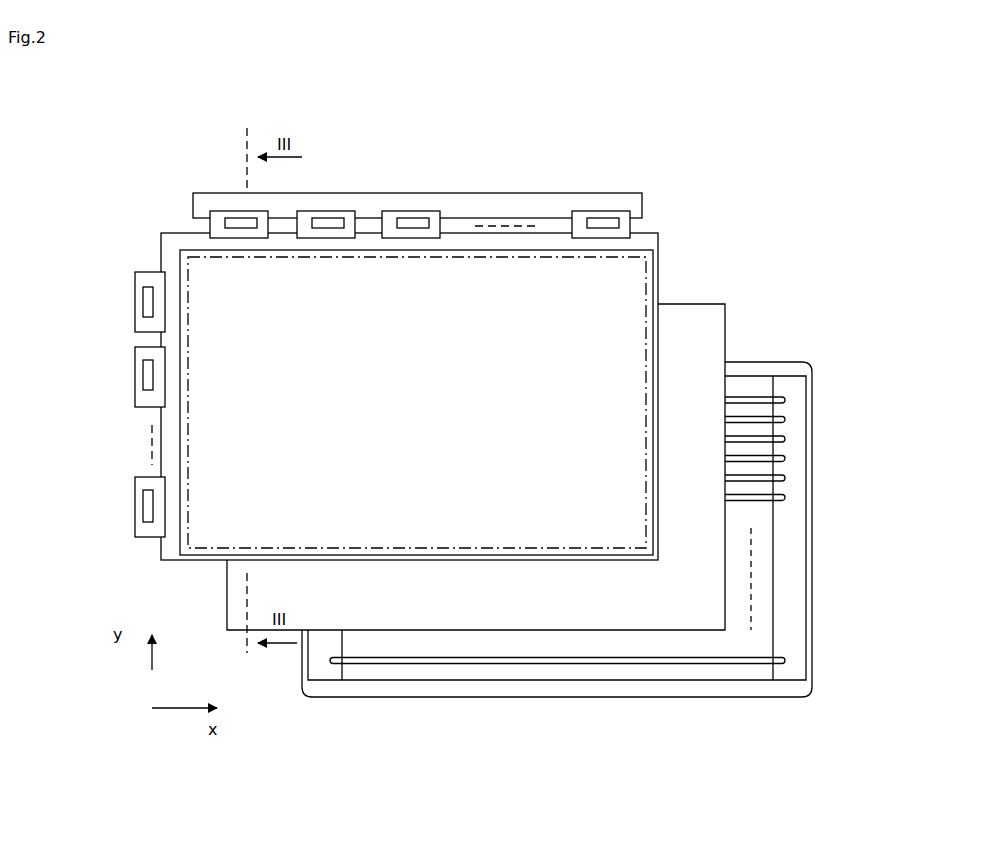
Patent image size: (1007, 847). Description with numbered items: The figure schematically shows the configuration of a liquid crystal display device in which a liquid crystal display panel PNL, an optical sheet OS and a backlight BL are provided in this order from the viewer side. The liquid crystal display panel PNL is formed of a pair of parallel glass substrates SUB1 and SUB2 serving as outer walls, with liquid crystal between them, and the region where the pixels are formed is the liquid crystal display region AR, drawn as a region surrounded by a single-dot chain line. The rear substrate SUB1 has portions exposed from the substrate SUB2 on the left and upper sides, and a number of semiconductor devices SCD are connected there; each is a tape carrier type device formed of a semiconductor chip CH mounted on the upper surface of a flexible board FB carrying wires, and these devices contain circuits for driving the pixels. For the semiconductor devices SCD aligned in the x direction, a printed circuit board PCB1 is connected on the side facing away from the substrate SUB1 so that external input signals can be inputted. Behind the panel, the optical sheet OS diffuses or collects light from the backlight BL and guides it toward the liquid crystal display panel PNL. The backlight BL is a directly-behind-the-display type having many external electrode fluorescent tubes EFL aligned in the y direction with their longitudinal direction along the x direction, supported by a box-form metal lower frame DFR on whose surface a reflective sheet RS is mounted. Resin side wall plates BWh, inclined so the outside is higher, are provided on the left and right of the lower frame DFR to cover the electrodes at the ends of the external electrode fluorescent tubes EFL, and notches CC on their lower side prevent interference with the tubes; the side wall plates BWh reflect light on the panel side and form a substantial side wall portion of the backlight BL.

The liquid crystal display panel PNL is at (346, 360).
The substrate SUB1 is at (162, 232).
The substrate SUB2 is at (192, 557).
The liquid crystal display region AR is at (417, 402).
The printed circuit board PCB1 is at (438, 193).
The semiconductor device SCD is at (225, 212).
The flexible board FB is at (135, 353).
The semiconductor chip CH is at (148, 380).
The optical sheet OS is at (708, 282).
The backlight BL is at (549, 535).
The lower frame DFR is at (783, 698).
The reflective sheet RS is at (587, 643).
The side wall plate BWh is at (792, 577).
The external electrode fluorescent tube EFL is at (745, 398).
The notch CC is at (783, 398).